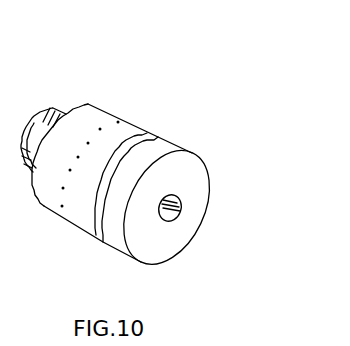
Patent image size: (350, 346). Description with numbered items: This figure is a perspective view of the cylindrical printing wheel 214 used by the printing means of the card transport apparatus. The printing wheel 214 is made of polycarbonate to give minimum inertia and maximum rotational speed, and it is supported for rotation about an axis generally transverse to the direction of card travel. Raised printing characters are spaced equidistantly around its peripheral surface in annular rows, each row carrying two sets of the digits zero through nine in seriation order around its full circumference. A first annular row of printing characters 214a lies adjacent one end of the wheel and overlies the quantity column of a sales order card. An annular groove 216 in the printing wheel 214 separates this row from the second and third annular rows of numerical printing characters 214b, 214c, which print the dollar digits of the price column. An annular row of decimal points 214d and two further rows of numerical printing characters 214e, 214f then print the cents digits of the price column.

The printing wheel 214 is at (163, 250).
The first annular row of printing characters 214a is at (182, 152).
The second annular row of numerical printing characters 214b is at (157, 136).
The third annular row of numerical printing characters 214c is at (150, 132).
The annular row of decimal points 214d is at (125, 119).
The row of numerical printing characters 214e is at (113, 113).
The row of numerical printing characters 214f is at (88, 106).
The annular groove 216 is at (100, 240).